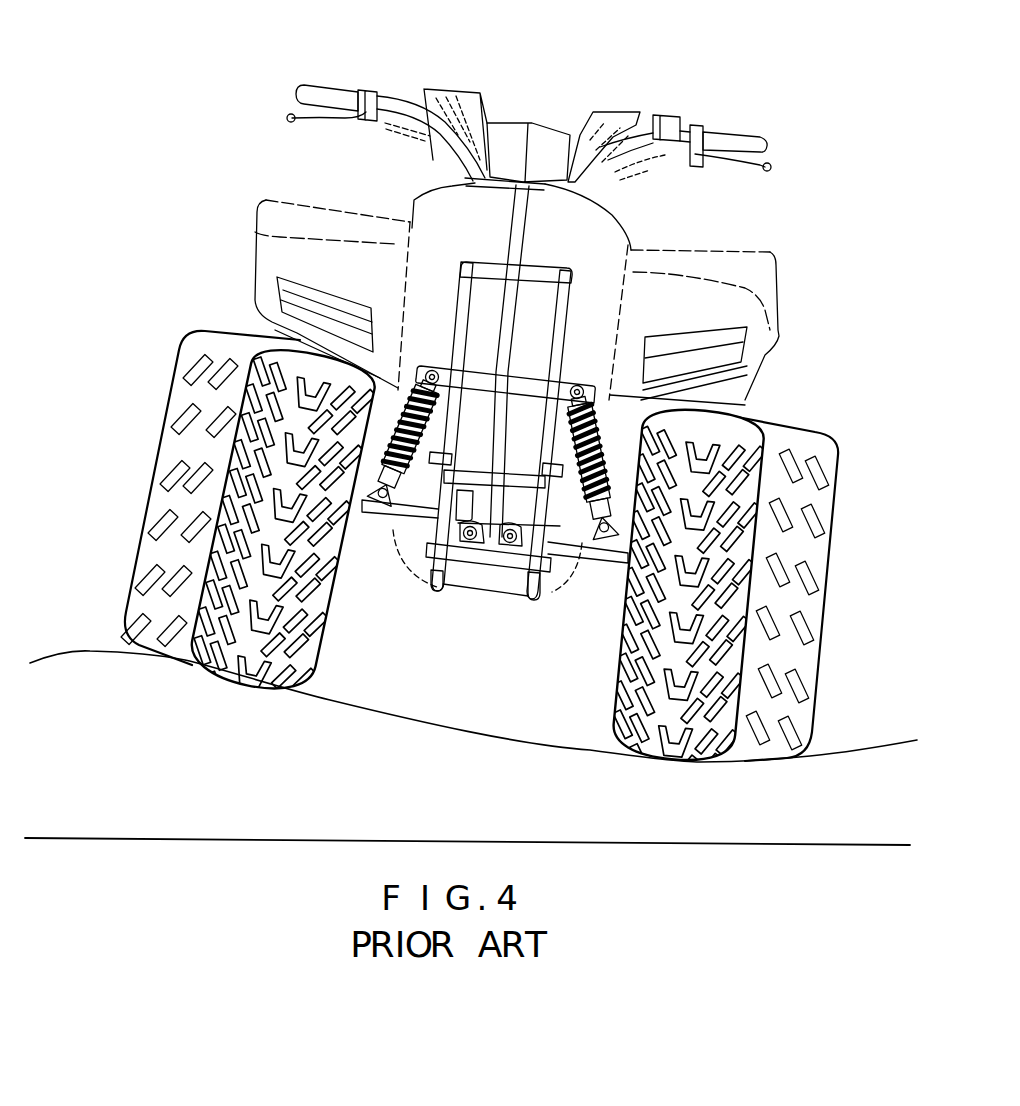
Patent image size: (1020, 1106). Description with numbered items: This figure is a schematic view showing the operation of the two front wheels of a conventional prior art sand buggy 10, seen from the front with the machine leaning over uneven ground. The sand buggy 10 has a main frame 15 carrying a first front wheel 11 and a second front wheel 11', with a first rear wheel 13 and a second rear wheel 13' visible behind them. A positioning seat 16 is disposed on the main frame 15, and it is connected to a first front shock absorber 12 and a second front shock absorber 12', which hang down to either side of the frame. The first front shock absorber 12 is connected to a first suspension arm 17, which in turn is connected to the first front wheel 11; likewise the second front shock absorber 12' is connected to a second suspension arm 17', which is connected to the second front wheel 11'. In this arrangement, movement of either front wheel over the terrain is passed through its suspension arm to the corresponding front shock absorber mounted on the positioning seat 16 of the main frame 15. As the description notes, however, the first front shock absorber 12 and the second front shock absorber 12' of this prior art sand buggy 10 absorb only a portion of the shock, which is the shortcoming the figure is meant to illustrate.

The sand buggy 10 is at (489, 78).
The first front wheel 11 is at (687, 599).
The second front wheel 11' is at (281, 535).
The first front shock absorber 12 is at (539, 434).
The second front shock absorber 12' is at (456, 426).
The first rear wheel 13 is at (782, 607).
The second rear wheel 13' is at (210, 517).
The main frame 15 is at (496, 268).
The positioning seat 16 is at (486, 380).
The first suspension arm 17 is at (588, 491).
The second suspension arm 17' is at (404, 464).